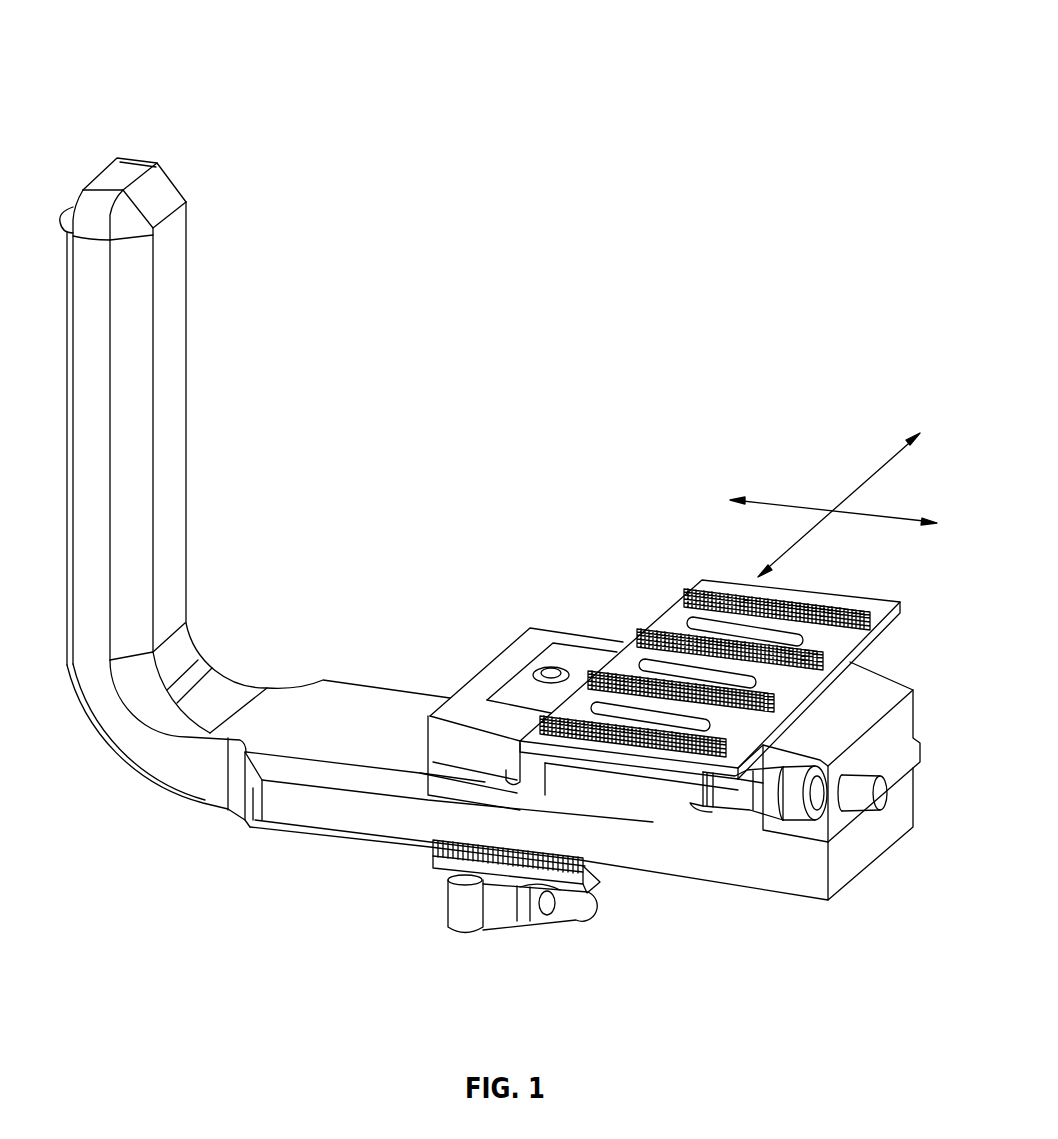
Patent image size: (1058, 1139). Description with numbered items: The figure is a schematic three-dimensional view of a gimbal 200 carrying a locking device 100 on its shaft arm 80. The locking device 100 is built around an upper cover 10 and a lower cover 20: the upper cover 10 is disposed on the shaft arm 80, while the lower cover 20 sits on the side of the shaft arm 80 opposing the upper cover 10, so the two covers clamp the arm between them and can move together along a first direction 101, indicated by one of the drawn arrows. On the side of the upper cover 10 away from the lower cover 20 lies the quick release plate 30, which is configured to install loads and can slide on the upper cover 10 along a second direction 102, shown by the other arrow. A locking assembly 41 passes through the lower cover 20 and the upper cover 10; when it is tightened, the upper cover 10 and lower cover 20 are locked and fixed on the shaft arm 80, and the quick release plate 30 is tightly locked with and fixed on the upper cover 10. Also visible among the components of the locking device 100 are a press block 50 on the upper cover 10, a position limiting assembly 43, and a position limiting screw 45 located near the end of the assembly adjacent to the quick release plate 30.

The gimbal 200 is at (500, 40).
The locking device 100 is at (815, 383).
The first direction 101 is at (836, 503).
The second direction 102 is at (839, 496).
The shaft arm 80 is at (292, 708).
The lower cover 20 is at (433, 853).
The upper cover 10 is at (500, 668).
The press block 50 is at (565, 658).
The quick release plate 30 is at (675, 625).
The locking assembly 41 is at (497, 917).
The position limiting screw 45 is at (712, 810).
The position limiting assembly 43 is at (757, 812).